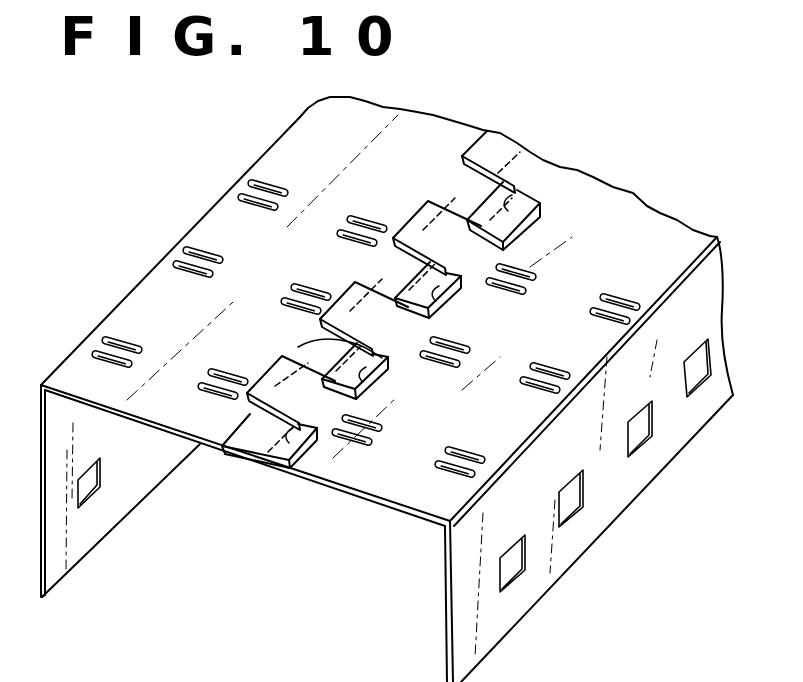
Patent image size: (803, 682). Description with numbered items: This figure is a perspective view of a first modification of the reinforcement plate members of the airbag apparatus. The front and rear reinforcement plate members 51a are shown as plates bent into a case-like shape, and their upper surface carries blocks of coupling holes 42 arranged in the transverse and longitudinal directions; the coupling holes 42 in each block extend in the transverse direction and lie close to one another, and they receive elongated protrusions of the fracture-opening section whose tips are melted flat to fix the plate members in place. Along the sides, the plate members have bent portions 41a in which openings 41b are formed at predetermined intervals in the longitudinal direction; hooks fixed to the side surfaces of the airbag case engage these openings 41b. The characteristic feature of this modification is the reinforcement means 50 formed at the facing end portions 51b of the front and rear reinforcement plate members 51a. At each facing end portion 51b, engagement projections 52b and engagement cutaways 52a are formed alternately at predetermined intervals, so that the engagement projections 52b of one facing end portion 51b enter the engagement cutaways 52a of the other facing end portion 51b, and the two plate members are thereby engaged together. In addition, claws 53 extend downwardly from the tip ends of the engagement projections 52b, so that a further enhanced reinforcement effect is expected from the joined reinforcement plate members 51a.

The reinforcement means 50 is at (403, 297).
The reinforcement plate member 51a is at (312, 136).
The facing end portion 51b is at (532, 199).
The engagement cutaway 52a is at (536, 182).
The engagement projection 52b is at (481, 143).
The claw 53 is at (248, 403).
The coupling hole 42 is at (254, 182).
The bent portion 41a is at (387, 459).
The opening 41b is at (98, 491).